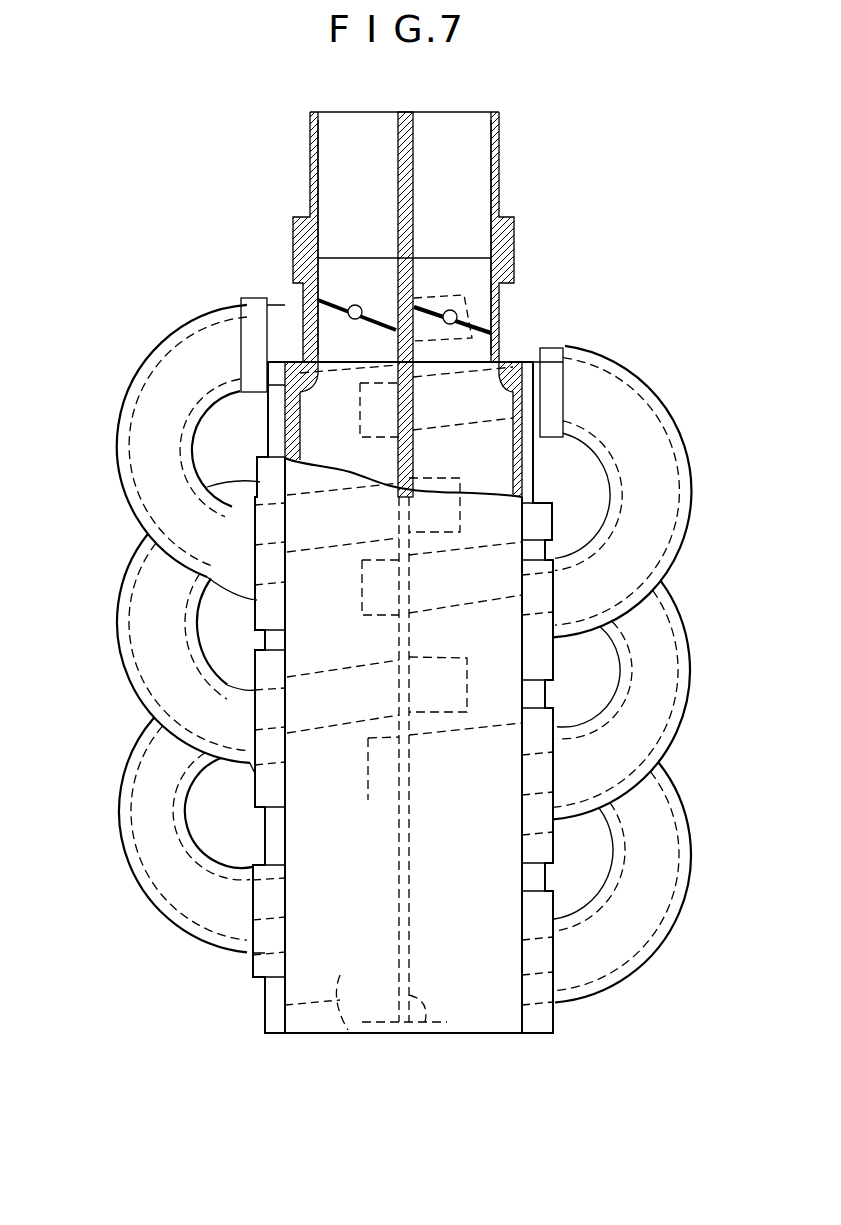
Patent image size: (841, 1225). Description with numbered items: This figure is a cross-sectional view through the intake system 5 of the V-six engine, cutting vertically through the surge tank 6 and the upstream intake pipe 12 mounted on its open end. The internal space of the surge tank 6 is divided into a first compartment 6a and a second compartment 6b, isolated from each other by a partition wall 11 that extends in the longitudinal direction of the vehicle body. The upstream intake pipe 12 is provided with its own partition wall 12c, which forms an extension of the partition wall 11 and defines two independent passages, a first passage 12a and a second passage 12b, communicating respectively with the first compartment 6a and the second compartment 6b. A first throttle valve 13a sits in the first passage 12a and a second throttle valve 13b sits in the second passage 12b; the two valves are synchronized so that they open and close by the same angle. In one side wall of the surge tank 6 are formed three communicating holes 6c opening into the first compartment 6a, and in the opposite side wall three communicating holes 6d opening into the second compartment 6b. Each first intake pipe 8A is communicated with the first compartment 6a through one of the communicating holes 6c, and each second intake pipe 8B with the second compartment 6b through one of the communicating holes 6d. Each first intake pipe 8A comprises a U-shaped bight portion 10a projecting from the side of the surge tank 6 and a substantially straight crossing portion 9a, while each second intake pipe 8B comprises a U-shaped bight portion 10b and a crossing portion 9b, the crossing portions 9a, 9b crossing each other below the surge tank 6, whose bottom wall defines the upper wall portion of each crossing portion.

The intake system 5 is at (474, 1036).
The surge tank 6 is at (522, 467).
The first compartment 6a is at (586, 1002).
The second compartment 6b is at (348, 982).
The communicating holes 6c is at (562, 588).
The communicating holes 6d is at (241, 554).
The first intake pipe 8A is at (673, 408).
The second intake pipe 8B is at (119, 412).
The crossing portion 9a is at (443, 430).
The crossing portion 9b is at (345, 370).
The U-shaped bight portion 10a is at (692, 474).
The U-shaped bight portion 10b is at (138, 372).
The partition wall 11 is at (398, 455).
The upstream intake pipe 12 is at (498, 158).
The first passage 12a is at (462, 145).
The second passage 12b is at (333, 157).
The partition wall 12c is at (400, 136).
The first throttle valve 13a is at (487, 322).
The second throttle valve 13b is at (318, 298).